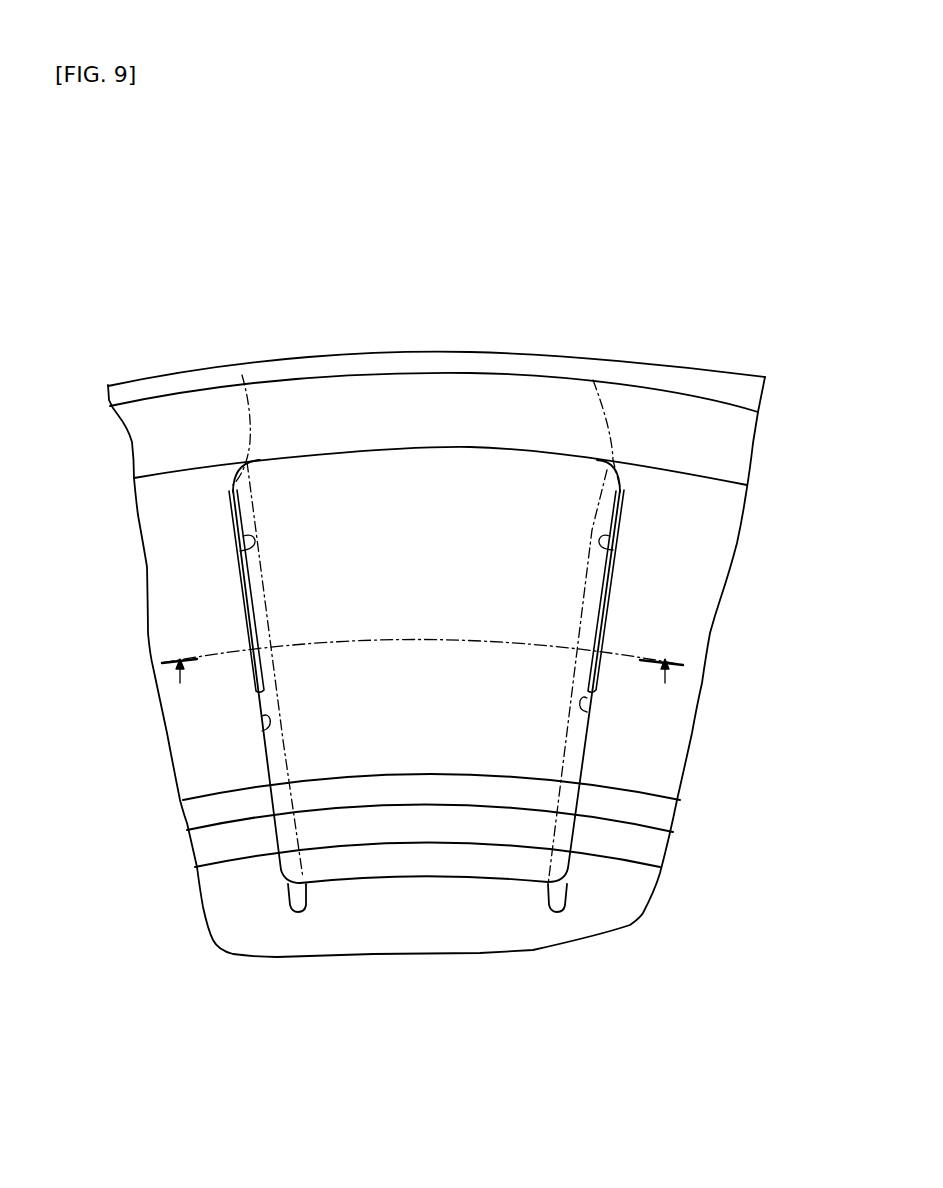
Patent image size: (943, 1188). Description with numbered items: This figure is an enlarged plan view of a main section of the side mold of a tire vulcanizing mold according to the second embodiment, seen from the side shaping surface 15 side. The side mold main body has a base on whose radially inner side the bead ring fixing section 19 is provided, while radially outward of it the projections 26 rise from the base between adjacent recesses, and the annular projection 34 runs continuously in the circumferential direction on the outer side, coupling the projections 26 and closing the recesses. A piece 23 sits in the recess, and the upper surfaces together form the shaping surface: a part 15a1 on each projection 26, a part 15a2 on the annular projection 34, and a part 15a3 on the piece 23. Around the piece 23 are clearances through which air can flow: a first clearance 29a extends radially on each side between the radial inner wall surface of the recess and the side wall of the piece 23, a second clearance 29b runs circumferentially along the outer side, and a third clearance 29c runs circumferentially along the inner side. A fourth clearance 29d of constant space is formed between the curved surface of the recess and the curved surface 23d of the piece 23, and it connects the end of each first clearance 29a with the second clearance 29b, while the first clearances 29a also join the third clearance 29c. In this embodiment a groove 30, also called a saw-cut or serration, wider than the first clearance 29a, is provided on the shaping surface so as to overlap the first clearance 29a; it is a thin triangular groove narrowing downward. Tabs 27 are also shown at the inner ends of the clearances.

The side shaping surface 15 is at (426, 140).
The part of the side shaping surface 15a1 is at (192, 583).
The part of the side shaping surface 15a2 is at (318, 422).
The part of the side shaping surface 15a3 is at (387, 505).
The bead ring fixing section 19 is at (448, 916).
The piece 23 is at (418, 682).
The curved surface 23d is at (232, 488).
The projection 26 is at (178, 505).
The engaging tab 27 is at (290, 913).
The first clearance 29a is at (262, 728).
The second clearance 29b is at (440, 452).
The third clearance 29c is at (365, 876).
The fourth clearance 29d is at (242, 375).
The groove 30 is at (245, 547).
The annular projection 34 is at (488, 373).